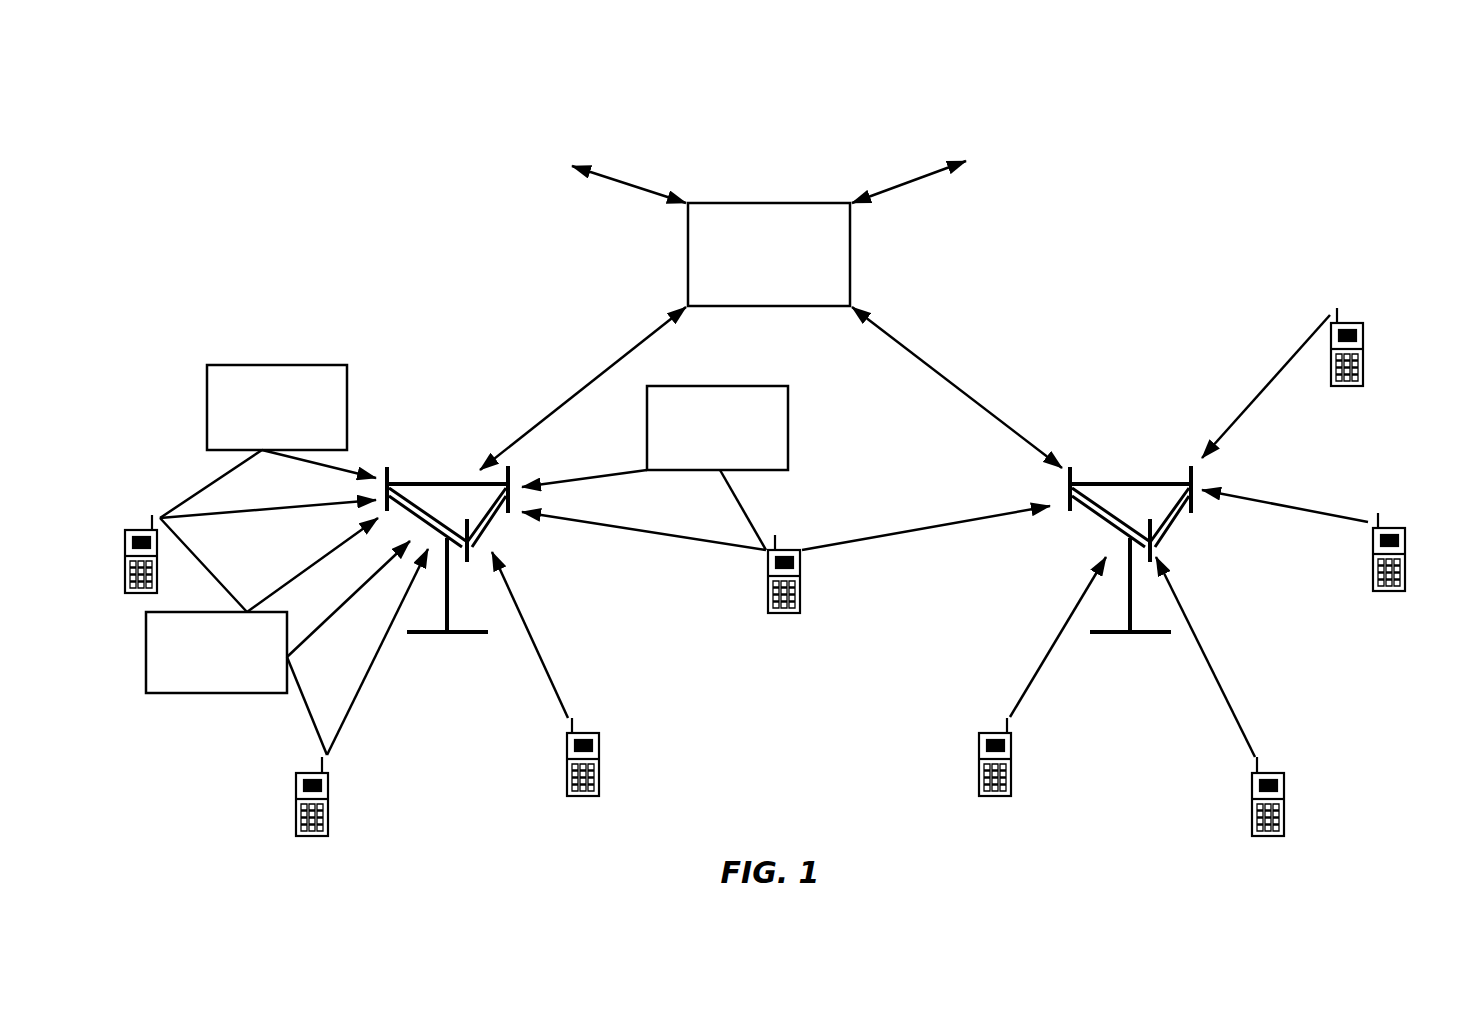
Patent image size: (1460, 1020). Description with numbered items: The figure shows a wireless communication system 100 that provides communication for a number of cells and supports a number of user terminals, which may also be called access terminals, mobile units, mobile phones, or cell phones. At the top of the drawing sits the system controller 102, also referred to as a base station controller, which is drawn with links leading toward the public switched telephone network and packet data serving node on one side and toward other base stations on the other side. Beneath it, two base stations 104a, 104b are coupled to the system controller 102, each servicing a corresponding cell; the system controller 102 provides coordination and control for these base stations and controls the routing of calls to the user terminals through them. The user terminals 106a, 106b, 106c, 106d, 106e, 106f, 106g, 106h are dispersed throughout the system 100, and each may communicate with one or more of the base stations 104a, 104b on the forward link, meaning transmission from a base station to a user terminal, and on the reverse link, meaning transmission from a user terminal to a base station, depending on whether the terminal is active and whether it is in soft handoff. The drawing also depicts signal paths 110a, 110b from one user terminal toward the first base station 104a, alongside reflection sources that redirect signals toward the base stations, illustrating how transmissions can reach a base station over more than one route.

The wireless communication system 100 is at (1296, 99).
The system controller 102 is at (762, 203).
The base station 104a is at (428, 478).
The base station 104b is at (1157, 466).
The user terminal 106a is at (137, 527).
The user terminal 106b is at (304, 773).
The user terminal 106c is at (588, 733).
The user terminal 106d is at (788, 550).
The user terminal 106e is at (990, 733).
The user terminal 106f is at (1272, 773).
The user terminal 106g is at (1392, 528).
The user terminal 106h is at (1352, 323).
The signal path 110a is at (357, 690).
The reflected signal path 110b is at (328, 632).